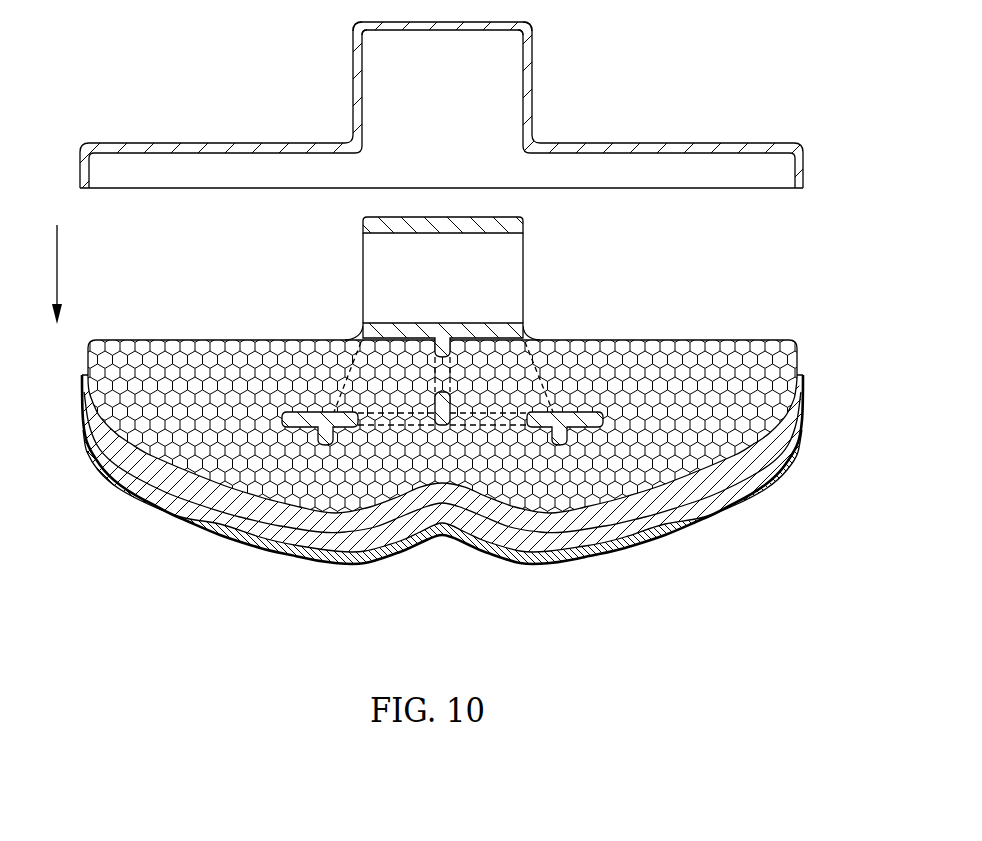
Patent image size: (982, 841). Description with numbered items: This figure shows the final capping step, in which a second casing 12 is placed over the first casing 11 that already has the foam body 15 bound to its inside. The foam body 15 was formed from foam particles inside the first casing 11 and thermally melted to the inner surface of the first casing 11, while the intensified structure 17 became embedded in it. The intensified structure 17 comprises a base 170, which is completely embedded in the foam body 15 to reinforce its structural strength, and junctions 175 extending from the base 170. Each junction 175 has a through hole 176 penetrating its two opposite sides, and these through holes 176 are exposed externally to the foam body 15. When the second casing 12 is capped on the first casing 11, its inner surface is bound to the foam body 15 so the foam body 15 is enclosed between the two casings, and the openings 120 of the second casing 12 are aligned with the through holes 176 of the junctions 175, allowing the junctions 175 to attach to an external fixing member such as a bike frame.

The first casing 11 is at (685, 562).
The second casing 12 is at (660, 150).
The openings 120 is at (353, 53).
The foam body 15 is at (748, 353).
The intensified structure 17 is at (623, 200).
The base 170 is at (577, 420).
The junctions 175 is at (507, 222).
The through hole 176 is at (377, 323).